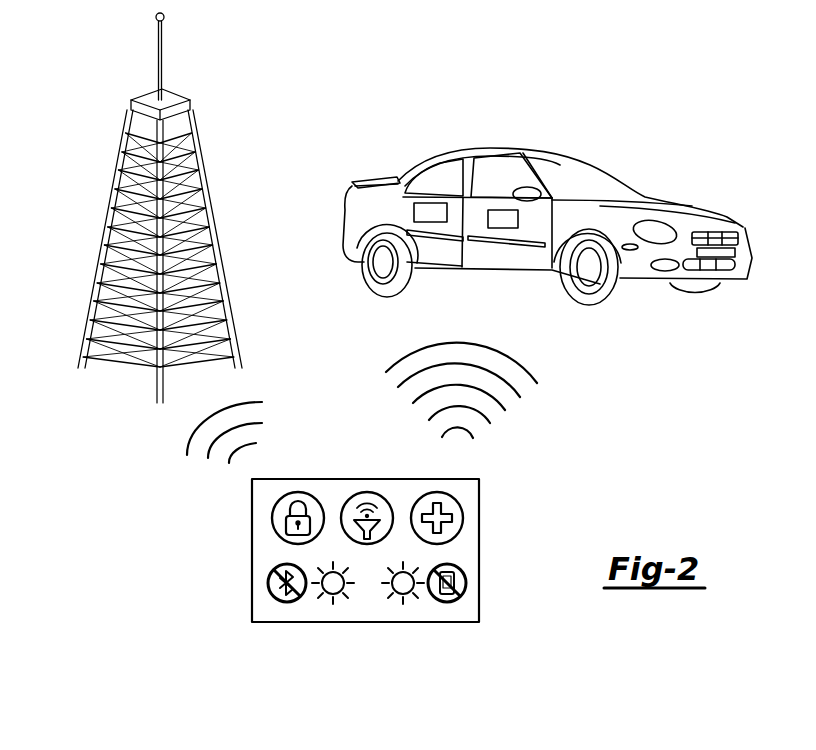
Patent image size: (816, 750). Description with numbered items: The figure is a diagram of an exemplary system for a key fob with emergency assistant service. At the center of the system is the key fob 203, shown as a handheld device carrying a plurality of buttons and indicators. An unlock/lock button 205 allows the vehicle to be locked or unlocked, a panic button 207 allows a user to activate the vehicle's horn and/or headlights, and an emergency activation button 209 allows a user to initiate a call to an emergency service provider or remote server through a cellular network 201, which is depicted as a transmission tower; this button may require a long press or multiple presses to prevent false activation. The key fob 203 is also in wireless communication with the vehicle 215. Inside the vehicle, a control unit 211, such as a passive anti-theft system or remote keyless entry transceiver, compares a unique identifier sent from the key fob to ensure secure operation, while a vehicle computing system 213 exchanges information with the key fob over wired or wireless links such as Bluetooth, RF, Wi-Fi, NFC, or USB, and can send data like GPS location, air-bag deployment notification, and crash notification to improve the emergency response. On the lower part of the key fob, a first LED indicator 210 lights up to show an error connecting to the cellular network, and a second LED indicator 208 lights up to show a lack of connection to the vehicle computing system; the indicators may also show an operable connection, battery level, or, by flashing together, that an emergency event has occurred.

The cellular network 201 is at (114, 208).
The key fob 203 is at (479, 500).
The unlock/lock button 205 is at (272, 513).
The panic button 207 is at (367, 492).
The emergency activation button 209 is at (463, 517).
The second LED indicator 208 is at (335, 604).
The first LED indicator 210 is at (404, 604).
The control unit 211 is at (430, 222).
The vehicle computing system 213 is at (498, 228).
The vehicle 215 is at (700, 205).